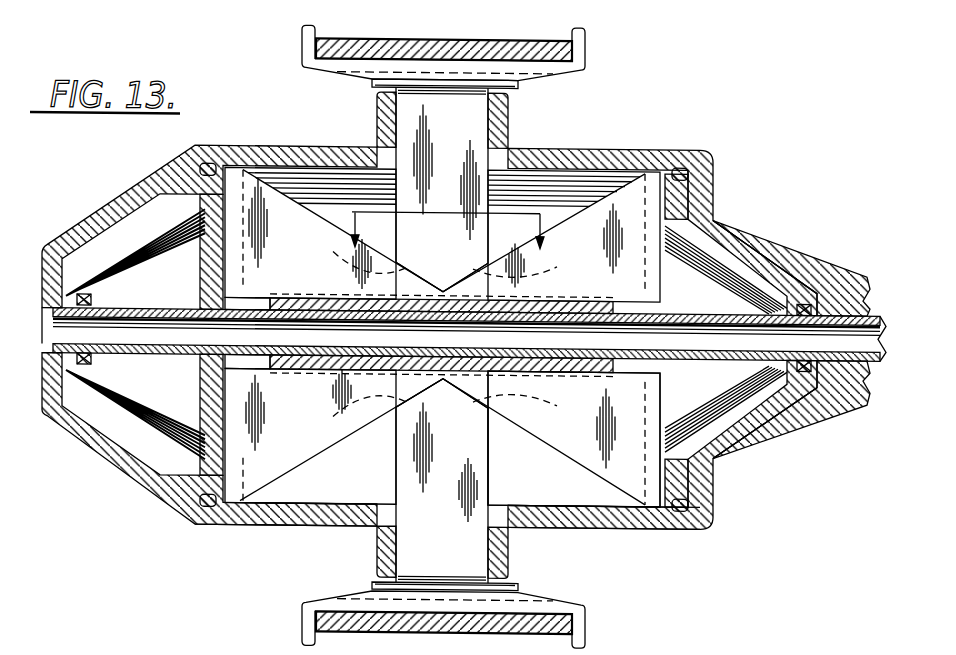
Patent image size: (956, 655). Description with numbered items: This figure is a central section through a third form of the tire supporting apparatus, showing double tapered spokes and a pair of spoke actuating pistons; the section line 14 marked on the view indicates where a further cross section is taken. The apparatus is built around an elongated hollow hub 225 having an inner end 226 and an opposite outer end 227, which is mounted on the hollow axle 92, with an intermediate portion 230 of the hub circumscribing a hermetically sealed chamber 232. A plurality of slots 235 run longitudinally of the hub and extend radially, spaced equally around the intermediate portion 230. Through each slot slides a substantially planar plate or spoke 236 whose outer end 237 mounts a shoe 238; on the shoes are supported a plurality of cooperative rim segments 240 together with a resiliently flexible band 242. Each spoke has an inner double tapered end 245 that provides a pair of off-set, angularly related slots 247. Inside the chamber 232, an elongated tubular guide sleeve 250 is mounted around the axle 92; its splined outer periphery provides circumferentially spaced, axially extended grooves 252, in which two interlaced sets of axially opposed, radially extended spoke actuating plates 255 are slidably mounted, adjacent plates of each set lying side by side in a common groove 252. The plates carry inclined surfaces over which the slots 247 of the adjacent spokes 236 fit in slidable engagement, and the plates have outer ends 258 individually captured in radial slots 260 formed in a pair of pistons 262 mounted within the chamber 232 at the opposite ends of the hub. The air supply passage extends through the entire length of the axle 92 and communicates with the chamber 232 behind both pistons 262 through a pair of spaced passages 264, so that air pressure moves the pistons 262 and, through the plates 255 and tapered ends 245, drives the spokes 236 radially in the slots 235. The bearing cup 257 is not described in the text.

The section line 14- 14 is at (447, 232).
The hollow axle 92 is at (693, 357).
The elongated hollow hub 225 is at (706, 142).
The inner end 226 is at (800, 258).
The outer end 227 is at (94, 226).
The intermediate portion 230 is at (513, 528).
The hermetically sealed chamber 232 is at (552, 480).
The slots 235 is at (397, 119).
The spoke 236 is at (448, 183).
The outer end 237 is at (456, 100).
The shoe 238 is at (376, 83).
The rim segments 240 is at (585, 47).
The resiliently flexible band 242 is at (503, 48).
The double tapered ends 245 is at (445, 220).
The off-set angularly related slots 247 is at (522, 272).
The tubular guide sleeve 250 is at (332, 306).
The grooves 252 is at (272, 380).
The spoke actuating plates 255 is at (271, 197).
The bearing cup 257 is at (266, 205).
The outer ends 258 is at (750, 213).
The radial slots 260 is at (672, 168).
The pistons 262 is at (733, 431).
The spaced passages 264 is at (55, 326).